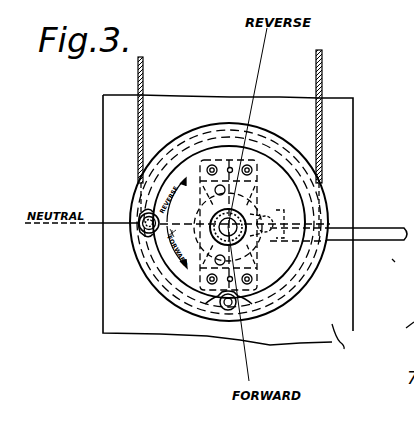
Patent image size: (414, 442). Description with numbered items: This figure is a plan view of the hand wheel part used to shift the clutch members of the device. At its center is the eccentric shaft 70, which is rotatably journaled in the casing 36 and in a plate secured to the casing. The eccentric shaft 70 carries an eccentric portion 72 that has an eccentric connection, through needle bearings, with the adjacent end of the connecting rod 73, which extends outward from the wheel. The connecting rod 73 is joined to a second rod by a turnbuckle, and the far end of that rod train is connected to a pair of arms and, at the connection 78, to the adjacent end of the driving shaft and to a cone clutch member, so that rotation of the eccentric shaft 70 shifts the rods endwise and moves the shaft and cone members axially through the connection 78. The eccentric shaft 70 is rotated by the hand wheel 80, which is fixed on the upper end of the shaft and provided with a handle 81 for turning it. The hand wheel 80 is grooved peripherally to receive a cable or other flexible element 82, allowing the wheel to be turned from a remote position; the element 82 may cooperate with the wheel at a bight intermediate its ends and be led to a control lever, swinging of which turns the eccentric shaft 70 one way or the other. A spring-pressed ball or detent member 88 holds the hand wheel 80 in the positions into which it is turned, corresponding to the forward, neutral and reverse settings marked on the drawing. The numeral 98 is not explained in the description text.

The casing 36 is at (345, 348).
The eccentric shaft 70 is at (256, 236).
The eccentric portion 72 is at (250, 268).
The connecting rod 73 is at (383, 233).
The connection 78 is at (398, 333).
The hand wheel 80 is at (122, 265).
The handle 81 is at (137, 228).
The cable or flexible element 82 is at (322, 81).
The spring-pressed ball or detent member 88 is at (262, 253).
The lever arm 98 is at (403, 270).